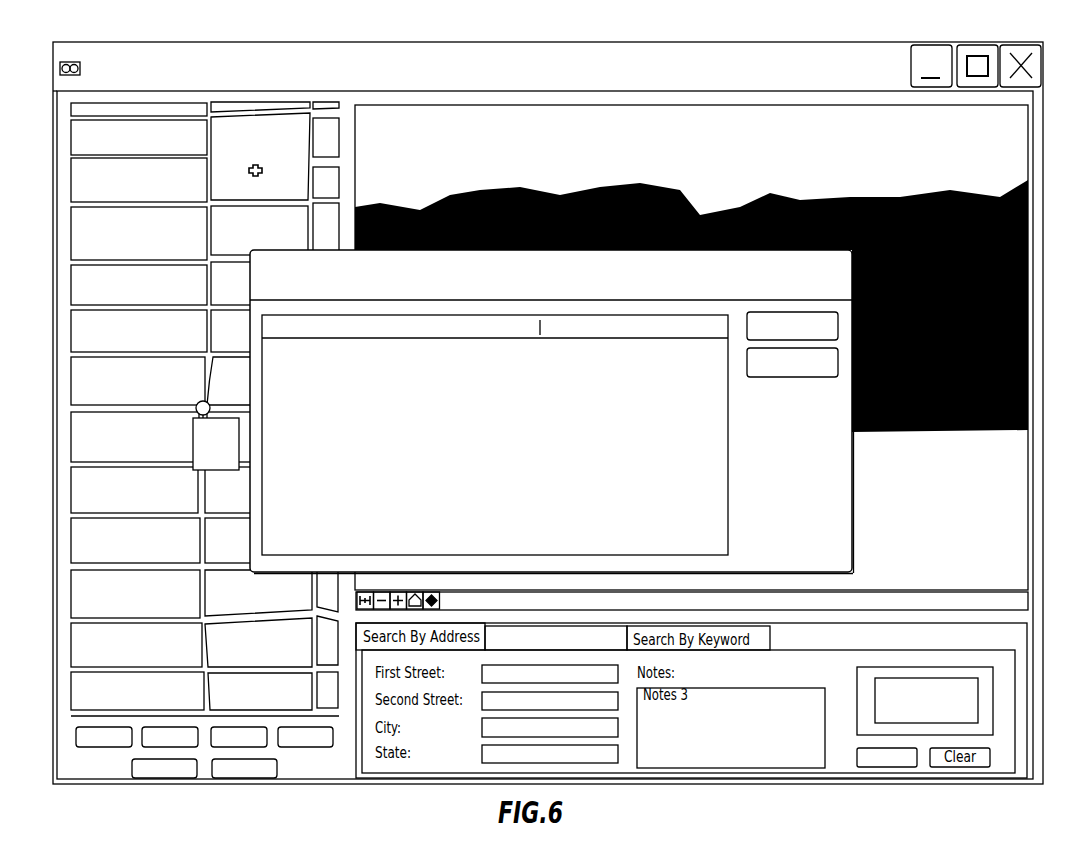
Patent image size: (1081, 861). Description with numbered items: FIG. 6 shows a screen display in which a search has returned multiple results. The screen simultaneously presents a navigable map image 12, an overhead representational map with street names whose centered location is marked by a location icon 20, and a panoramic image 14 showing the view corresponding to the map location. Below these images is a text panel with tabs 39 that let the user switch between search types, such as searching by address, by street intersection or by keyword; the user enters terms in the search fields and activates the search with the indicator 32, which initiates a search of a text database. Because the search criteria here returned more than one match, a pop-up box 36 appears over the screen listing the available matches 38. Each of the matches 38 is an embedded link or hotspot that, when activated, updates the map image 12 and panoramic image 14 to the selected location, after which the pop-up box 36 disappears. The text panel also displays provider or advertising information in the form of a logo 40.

The map image 12 is at (281, 152).
The panoramic image 14 is at (570, 134).
The location icon 20 is at (198, 402).
The indicator 32 is at (907, 767).
The pop-up box 36 is at (772, 538).
The matches 38 is at (370, 416).
The tabs 39 is at (494, 648).
The logo 40 is at (984, 698).